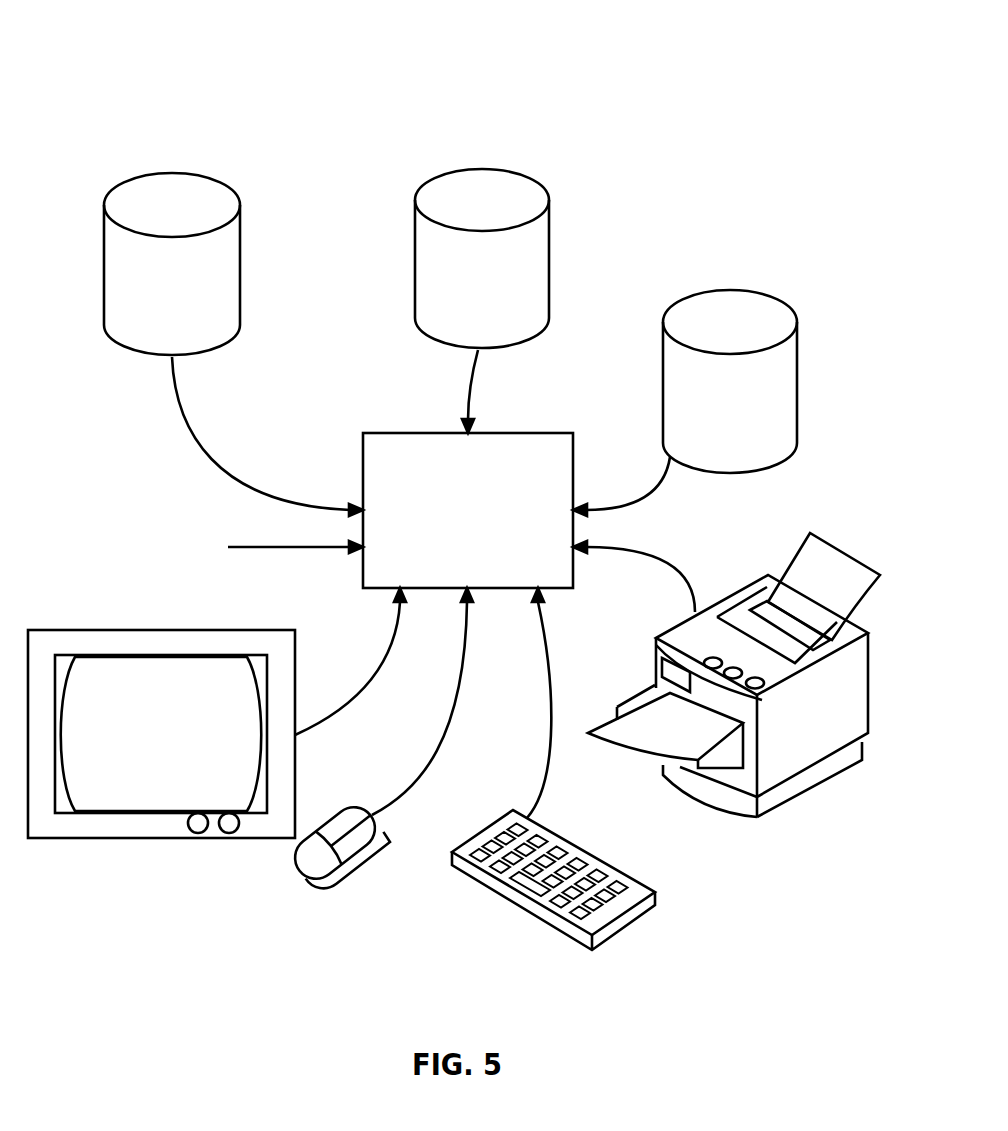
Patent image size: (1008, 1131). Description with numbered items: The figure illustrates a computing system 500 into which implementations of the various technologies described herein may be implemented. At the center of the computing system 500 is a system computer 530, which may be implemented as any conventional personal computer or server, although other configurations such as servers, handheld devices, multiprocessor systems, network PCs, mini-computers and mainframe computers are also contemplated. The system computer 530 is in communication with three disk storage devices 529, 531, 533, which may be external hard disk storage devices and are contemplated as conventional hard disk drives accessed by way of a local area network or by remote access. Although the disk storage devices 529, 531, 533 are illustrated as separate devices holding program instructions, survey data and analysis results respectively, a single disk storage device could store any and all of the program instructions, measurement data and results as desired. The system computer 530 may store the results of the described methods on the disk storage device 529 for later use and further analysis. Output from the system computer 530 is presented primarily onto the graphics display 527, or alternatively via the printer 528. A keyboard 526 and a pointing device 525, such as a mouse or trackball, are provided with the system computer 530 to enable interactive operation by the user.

The computing system 500 is at (143, 42).
The pointing device 525 is at (308, 890).
The keyboard 526 is at (618, 938).
The graphics display 527 is at (162, 838).
The printer 528 is at (777, 805).
The disk storage device 529 is at (733, 290).
The system computer 530 is at (503, 433).
The disk storage device 531 is at (519, 170).
The disk storage device 533 is at (212, 175).